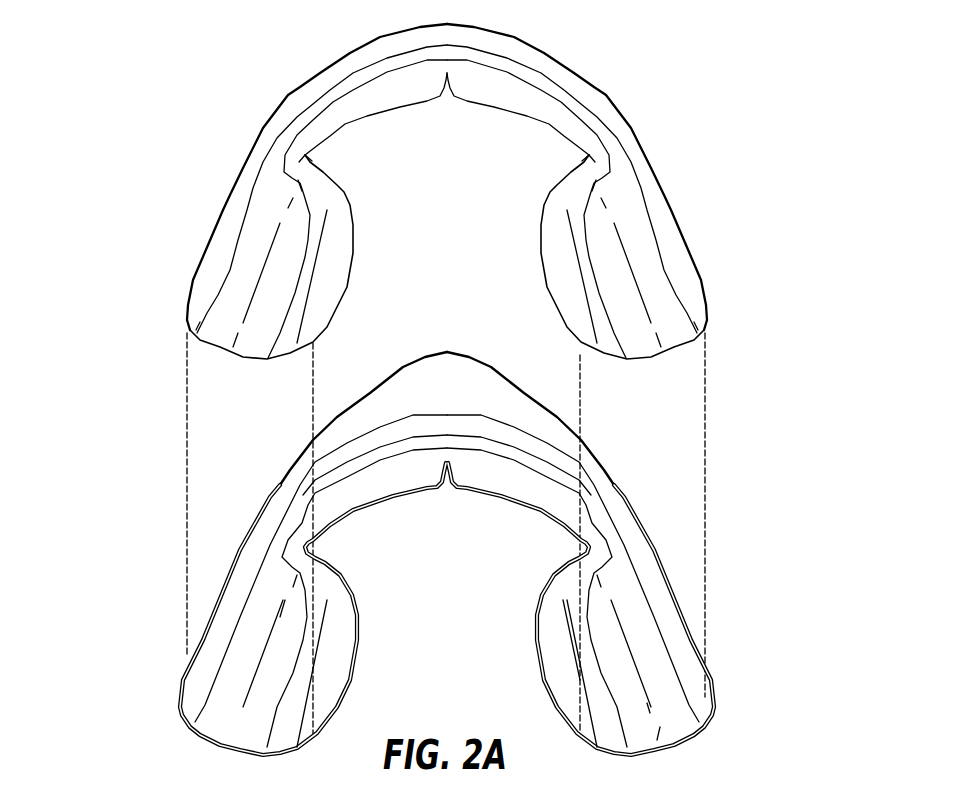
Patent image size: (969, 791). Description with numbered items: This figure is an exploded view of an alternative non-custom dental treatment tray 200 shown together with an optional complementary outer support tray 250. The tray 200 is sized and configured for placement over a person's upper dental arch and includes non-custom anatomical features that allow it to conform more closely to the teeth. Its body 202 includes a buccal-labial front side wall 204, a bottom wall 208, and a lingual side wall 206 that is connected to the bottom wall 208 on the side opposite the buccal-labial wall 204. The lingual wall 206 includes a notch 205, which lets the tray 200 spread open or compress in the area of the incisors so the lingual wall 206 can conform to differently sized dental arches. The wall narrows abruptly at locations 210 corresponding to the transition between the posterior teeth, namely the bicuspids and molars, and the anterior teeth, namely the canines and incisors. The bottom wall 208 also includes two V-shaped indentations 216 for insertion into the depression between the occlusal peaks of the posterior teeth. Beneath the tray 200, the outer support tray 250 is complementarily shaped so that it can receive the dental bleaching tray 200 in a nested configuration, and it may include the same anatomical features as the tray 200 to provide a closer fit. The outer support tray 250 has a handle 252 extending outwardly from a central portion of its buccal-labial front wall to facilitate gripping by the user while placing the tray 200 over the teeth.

The non-custom dental treatment tray 200 is at (200, 126).
The body 202 is at (404, 96).
The buccal-labial front side wall 204 is at (570, 73).
The notch 205 is at (449, 82).
The lingual side wall 206 is at (553, 110).
The bottom wall 208 is at (253, 240).
The locations of abrupt width reduction 210 is at (320, 154).
The V-shaped indentations 216 is at (270, 253).
The outer support tray 250 is at (630, 607).
The handle 252 is at (487, 377).